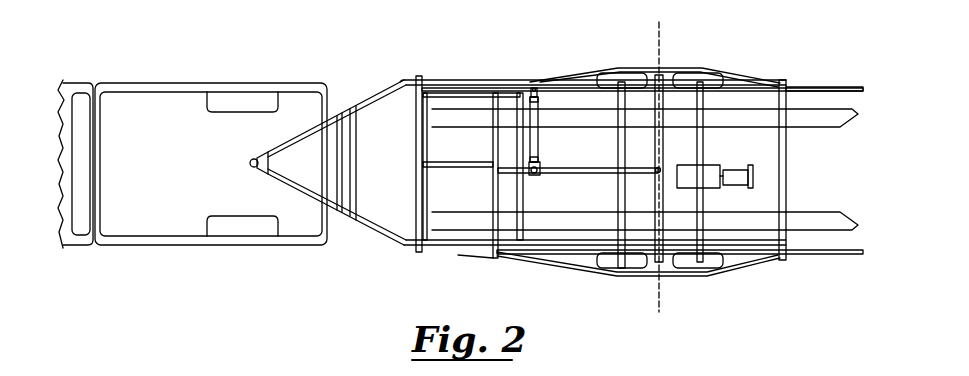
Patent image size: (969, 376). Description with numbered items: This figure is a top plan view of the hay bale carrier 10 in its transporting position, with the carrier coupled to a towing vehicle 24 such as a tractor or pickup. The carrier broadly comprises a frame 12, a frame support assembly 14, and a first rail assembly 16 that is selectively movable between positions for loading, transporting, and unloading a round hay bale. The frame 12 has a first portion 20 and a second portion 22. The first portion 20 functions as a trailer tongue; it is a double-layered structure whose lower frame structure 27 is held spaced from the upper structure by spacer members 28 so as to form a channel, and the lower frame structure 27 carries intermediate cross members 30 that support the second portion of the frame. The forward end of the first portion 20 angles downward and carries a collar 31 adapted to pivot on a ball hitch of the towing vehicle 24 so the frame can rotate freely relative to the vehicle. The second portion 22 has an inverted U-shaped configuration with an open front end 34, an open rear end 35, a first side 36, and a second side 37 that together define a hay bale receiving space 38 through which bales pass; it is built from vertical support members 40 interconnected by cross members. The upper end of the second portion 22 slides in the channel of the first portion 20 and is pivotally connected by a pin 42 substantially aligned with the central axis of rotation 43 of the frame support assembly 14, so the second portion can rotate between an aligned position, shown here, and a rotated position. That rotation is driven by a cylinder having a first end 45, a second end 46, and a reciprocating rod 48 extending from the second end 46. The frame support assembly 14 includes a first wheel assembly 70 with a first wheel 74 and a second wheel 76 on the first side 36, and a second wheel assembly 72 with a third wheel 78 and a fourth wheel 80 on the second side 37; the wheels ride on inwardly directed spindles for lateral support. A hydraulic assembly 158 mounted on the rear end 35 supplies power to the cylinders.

The hay bale carrier 10 is at (557, 155).
The frame 12 is at (394, 80).
The frame support assembly 14 is at (633, 276).
The first rail assembly 16 is at (473, 106).
The first portion 20 is at (367, 228).
The second portion 22 is at (418, 255).
The towing vehicle 24 is at (232, 245).
The lower frame structure 27 is at (437, 253).
The spacer members 28 is at (397, 247).
The intermediate cross members 30 is at (437, 98).
The collar 31 is at (250, 162).
The front end 34 is at (413, 172).
The rear end 35 is at (785, 130).
The first side 36 is at (523, 90).
The second side 37 is at (503, 258).
The hay bale receiving space 38 is at (560, 100).
The vertical support members 40 is at (665, 98).
The pin 42 is at (595, 141).
The central axis of rotation 43 is at (660, 305).
The first end 45 is at (542, 168).
The second end 46 is at (540, 98).
The reciprocating rod 48 is at (543, 82).
The first wheel assembly 70 is at (658, 50).
The second wheel assembly 72 is at (673, 274).
The first wheel 74 is at (657, 72).
The second wheel 76 is at (670, 87).
The third wheel 78 is at (590, 262).
The fourth wheel 80 is at (740, 270).
The hydraulic assembly 158 is at (753, 177).